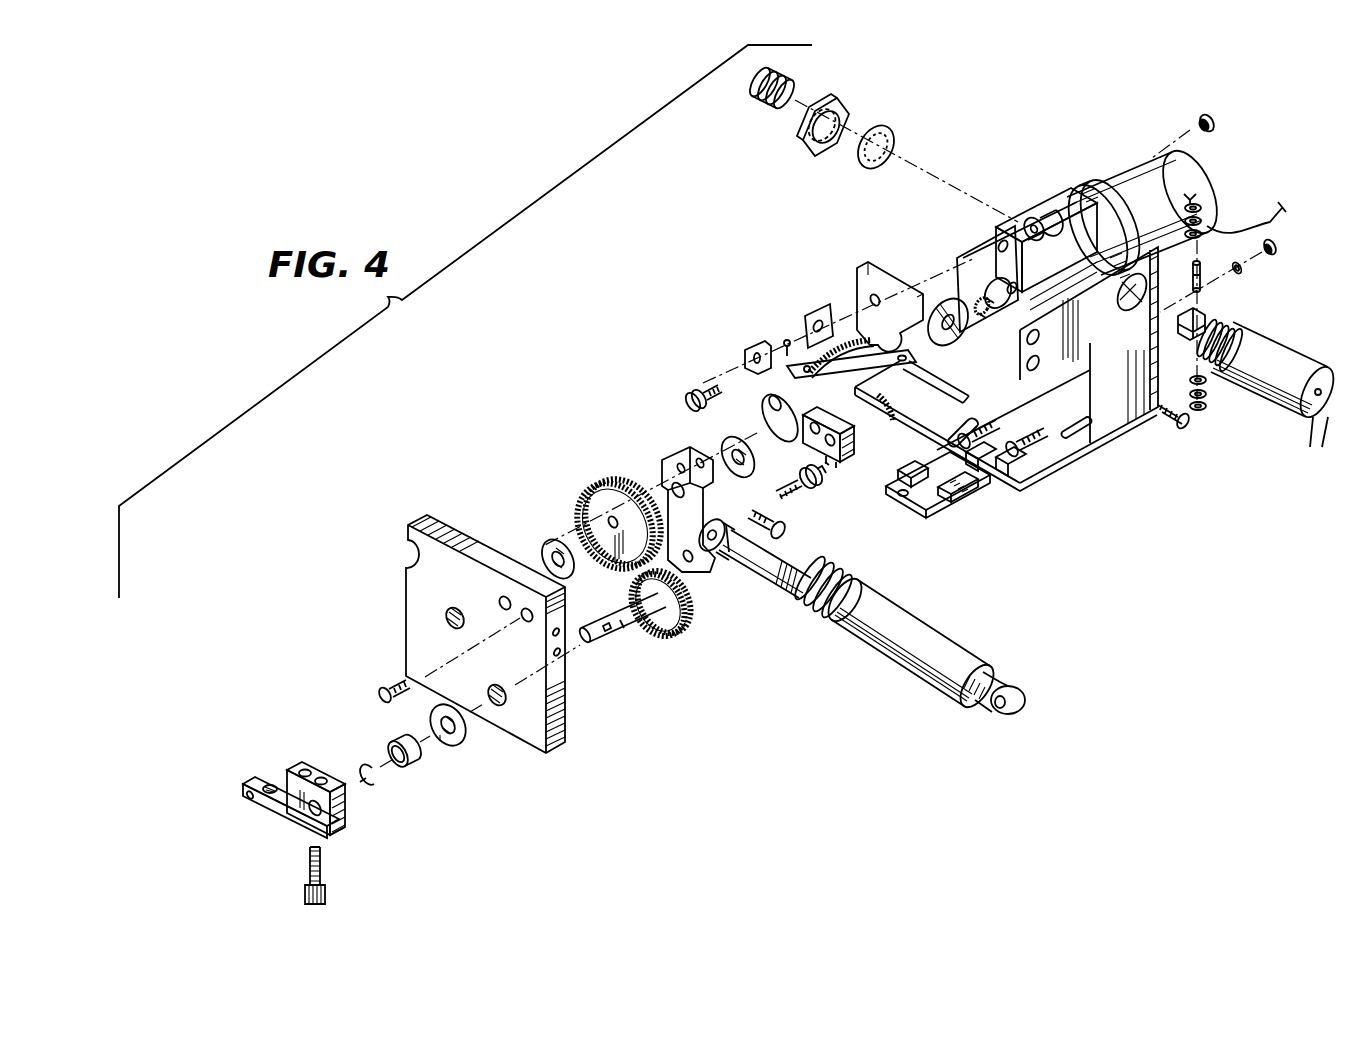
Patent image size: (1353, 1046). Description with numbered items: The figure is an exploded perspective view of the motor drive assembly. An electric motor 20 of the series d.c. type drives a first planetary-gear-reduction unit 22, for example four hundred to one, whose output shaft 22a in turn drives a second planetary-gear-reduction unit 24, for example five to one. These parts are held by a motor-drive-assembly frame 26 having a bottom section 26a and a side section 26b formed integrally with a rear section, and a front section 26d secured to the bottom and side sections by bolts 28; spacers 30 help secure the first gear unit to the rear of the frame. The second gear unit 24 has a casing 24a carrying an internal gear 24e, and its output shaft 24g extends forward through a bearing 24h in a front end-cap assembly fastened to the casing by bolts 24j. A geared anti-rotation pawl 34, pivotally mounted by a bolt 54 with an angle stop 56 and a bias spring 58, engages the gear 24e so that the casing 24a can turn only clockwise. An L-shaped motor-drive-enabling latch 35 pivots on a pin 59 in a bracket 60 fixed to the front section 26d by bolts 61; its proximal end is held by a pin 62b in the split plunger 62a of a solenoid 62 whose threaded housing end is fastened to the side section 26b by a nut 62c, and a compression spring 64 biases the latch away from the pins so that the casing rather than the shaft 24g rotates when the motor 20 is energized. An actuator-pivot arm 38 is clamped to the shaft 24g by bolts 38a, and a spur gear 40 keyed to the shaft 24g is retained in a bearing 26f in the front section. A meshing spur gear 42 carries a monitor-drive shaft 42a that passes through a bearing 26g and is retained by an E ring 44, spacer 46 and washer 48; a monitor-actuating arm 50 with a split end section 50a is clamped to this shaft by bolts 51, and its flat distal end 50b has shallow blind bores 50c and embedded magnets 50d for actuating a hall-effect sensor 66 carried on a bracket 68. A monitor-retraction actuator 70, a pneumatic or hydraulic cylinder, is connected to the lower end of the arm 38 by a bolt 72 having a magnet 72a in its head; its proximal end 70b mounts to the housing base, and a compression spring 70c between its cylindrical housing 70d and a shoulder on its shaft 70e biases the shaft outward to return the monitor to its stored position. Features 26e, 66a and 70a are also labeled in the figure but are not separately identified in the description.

The electric motor 20 is at (1155, 165).
The first planetary-gear-reduction unit 22 is at (1045, 263).
The output shaft 22a is at (987, 298).
The second planetary-gear-reduction unit 24 is at (905, 409).
The casing 24a is at (895, 322).
The internal gear 24e is at (890, 423).
The output shaft 24g is at (767, 429).
The bearing 24h is at (767, 404).
The bolts 24j is at (805, 366).
The motor-drive-assembly frame 26 is at (1128, 442).
The bottom section 26a is at (1043, 428).
The side section 26b is at (1133, 361).
The front section 26d is at (398, 579).
The motor flange 26e is at (1090, 195).
The bearing 26f is at (444, 614).
The bearing 26g is at (500, 708).
The bolts 28 is at (1190, 422).
The spacers 30 is at (1036, 222).
The geared pawl 34 is at (816, 308).
The motor-drive-enabling latch 35 is at (857, 446).
The actuator-pivot arm 38 is at (667, 459).
The bolts 38a is at (785, 532).
The spur gear 40 is at (607, 490).
The spur gear 42 is at (682, 633).
The monitor-drive shaft 42a is at (637, 628).
The E ring 44 is at (372, 788).
The spacer 46 is at (413, 766).
The washer 48 is at (456, 742).
The monitor-actuating arm 50 is at (292, 842).
The split end section 50a is at (347, 832).
The distal end 50b is at (250, 778).
The blind bores 50c is at (274, 781).
The magnets 50d is at (250, 801).
The bolts 51 is at (325, 872).
The bolt 54 is at (690, 393).
The angle stop 56 is at (742, 352).
The bias spring 58 is at (782, 341).
The pin 59 is at (850, 348).
The bracket 60 is at (836, 466).
The bolts 61 is at (384, 687).
The solenoid 62 is at (1297, 357).
The plunger 62a is at (1207, 318).
The pin 62b is at (1206, 280).
The nut 62c is at (838, 103).
The compression spring 64 is at (786, 86).
The hall-effect sensor 66 is at (960, 500).
The hole 66a is at (905, 497).
The bracket 68 is at (1000, 462).
The monitor-retraction actuator 70 is at (972, 626).
The eye end 70a is at (716, 557).
The proximal end 70b is at (1012, 684).
The compression spring 70c is at (846, 596).
The cylindrical housing 70d is at (912, 630).
The shaft 70e is at (776, 592).
The bolt 72 is at (804, 478).
The magnet 72a is at (822, 490).